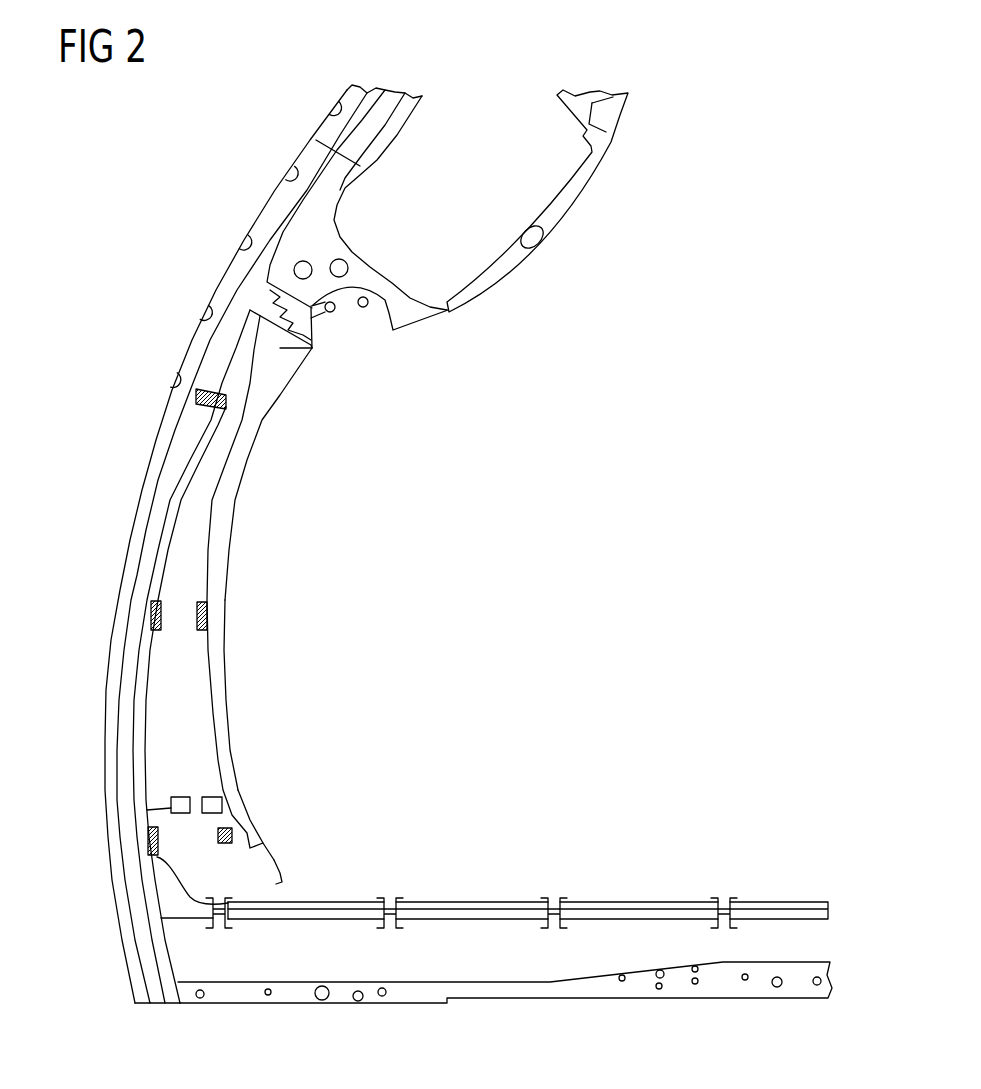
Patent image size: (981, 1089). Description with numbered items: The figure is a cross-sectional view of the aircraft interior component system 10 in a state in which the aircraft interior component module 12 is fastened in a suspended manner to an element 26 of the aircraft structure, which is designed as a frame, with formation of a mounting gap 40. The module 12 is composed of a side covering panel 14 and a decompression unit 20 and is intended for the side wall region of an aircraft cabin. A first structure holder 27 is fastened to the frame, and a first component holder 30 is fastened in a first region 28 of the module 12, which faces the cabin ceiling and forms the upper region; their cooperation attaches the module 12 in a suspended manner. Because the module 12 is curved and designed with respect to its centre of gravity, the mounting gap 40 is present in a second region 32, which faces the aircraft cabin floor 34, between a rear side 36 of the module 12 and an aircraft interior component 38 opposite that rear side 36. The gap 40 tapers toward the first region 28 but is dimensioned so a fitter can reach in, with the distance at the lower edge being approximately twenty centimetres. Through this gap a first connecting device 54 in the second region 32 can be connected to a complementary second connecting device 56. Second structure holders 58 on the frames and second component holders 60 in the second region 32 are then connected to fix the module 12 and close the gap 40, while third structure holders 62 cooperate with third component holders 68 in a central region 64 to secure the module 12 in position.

The aircraft interior component system 10 is at (130, 172).
The aircraft interior component module 12 is at (438, 486).
The side covering panel 14 is at (232, 496).
The decompression unit 20 is at (300, 815).
The elements of the aircraft structure 26 is at (207, 350).
The first structure holders 27 is at (195, 388).
The first region 28 is at (270, 440).
The first component holders 30 is at (227, 401).
The second region 32 is at (305, 859).
The aircraft cabin floor 34 is at (597, 902).
The rear side 36 is at (207, 703).
The aircraft interior component 38 is at (138, 727).
The mounting gap 40 is at (208, 882).
The first connecting device 54 is at (222, 798).
The second connecting device 56 is at (180, 793).
The second structure holders 58 is at (150, 840).
The second component holders 60 is at (227, 845).
The third structure holders 62 is at (153, 613).
The third, central region 64 is at (262, 561).
The third component holders 68 is at (208, 616).